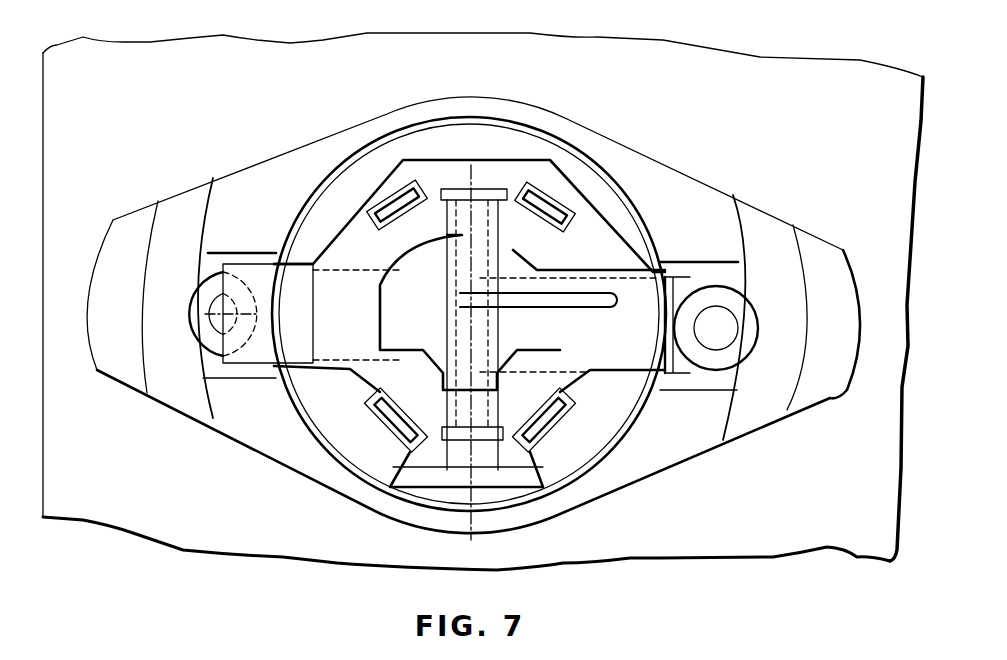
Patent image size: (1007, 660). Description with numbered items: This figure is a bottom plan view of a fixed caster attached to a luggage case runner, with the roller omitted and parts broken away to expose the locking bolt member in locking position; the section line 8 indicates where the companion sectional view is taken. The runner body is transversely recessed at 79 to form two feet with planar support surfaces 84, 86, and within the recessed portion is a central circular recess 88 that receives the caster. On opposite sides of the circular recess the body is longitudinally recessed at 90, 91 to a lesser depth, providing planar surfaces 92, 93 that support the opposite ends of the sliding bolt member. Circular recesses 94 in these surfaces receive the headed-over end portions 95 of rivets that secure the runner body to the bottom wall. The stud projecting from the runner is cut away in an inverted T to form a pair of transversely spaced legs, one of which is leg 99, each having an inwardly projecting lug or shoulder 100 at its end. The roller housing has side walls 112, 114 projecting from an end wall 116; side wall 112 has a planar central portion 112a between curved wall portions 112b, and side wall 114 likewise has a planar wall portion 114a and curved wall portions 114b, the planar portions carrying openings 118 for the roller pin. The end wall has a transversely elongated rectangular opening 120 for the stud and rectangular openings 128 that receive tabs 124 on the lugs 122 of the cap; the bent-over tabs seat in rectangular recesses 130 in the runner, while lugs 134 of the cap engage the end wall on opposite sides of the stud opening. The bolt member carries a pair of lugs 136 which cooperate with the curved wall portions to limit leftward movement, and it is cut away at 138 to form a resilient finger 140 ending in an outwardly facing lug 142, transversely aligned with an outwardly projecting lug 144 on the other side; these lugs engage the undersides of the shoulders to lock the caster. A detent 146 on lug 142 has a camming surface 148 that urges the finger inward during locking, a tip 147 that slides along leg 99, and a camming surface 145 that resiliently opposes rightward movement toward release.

The transverse recess 79 is at (283, 175).
The planar surface 84 is at (181, 370).
The planar surface 86 is at (781, 397).
The central circular recess 88 is at (482, 120).
The longitudinal recess 90 is at (231, 255).
The longitudinal recess 91 is at (660, 262).
The planar surface 92 is at (262, 258).
The planar surface 93 is at (712, 268).
The circular recess 94 is at (197, 300).
The headed-over end portion 95 is at (205, 314).
The leg 99 is at (518, 233).
The lug or shoulder 100 is at (474, 252).
The side wall 112 is at (527, 480).
The planar central portion 112a is at (502, 485).
The curved wall portion 112b is at (362, 493).
The side wall 114 is at (449, 150).
The planar wall portion 114a is at (402, 150).
The curved wall portion 114b is at (363, 170).
The end wall 116 is at (530, 170).
The opening 118 is at (493, 150).
The rectangular opening 120 is at (445, 324).
The lug 122 is at (335, 425).
The tab 124 is at (327, 372).
The rectangular opening 128 is at (386, 500).
The rectangular recess 130 is at (318, 398).
The lug 134 is at (420, 145).
The lug 136 is at (303, 228).
The cut-away 138 is at (568, 293).
The resilient finger 140 is at (612, 300).
The outwardly facing lug 142 is at (562, 222).
The outwardly projecting lug 144 is at (529, 427).
The camming surface 145 is at (368, 190).
The detent 146 is at (447, 262).
The tip 147 is at (372, 200).
The camming surface 148 is at (380, 258).
The section line 8- 8 is at (65, 286).